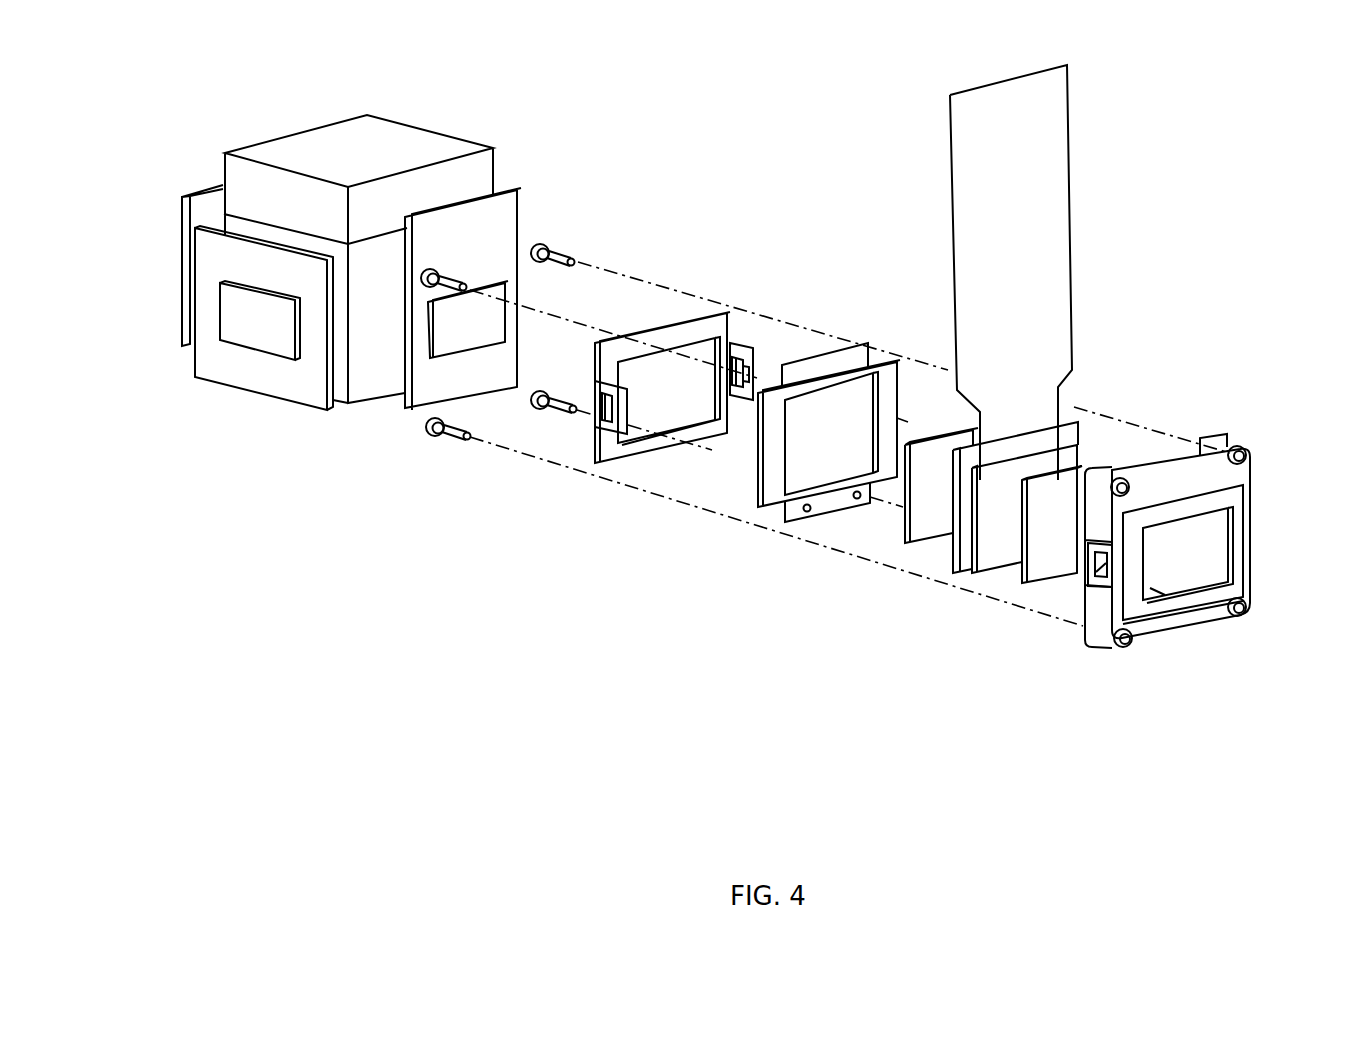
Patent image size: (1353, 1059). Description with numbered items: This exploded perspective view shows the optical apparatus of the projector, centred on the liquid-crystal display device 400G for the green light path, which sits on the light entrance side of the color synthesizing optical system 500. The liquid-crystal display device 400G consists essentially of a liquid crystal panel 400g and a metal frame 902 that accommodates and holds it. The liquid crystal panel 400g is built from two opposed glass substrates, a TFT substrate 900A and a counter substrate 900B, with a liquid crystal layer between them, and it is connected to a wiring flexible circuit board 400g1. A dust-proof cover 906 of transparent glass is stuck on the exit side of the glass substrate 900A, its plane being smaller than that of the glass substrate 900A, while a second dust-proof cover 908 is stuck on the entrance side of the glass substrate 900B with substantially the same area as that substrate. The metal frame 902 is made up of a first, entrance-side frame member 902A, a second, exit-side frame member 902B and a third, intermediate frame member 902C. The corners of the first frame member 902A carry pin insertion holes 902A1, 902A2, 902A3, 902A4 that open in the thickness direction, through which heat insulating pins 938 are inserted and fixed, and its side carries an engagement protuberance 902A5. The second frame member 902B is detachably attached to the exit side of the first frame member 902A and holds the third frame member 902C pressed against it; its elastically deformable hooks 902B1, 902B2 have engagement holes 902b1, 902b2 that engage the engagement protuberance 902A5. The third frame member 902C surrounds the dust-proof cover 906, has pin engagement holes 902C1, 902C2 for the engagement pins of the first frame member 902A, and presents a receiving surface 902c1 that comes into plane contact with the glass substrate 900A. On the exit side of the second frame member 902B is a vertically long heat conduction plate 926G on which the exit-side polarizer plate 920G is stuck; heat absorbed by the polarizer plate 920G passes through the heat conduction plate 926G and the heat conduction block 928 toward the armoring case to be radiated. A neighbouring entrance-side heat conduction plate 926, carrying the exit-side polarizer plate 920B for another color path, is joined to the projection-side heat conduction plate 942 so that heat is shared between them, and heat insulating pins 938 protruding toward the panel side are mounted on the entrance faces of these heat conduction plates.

The liquid-crystal display device 400G is at (1118, 180).
The liquid crystal panel 400g is at (1060, 694).
The wiring flexible circuit board 400g1 is at (1053, 133).
The color synthesizing optical system 500 is at (365, 332).
The heat conduction block 928 is at (307, 143).
The projection-side heat conduction plate 942 is at (197, 192).
The entrance-side heat conduction plate 926 is at (185, 362).
The exit-side polarizer plate 920B is at (267, 347).
The exit-side polarizer plate 920G is at (456, 347).
The entrance-side heat conduction plate 926G is at (408, 410).
The heat insulating pins 938 is at (456, 277).
The metal frame 902 is at (927, 190).
The first frame member 902A is at (1140, 365).
The pin insertion hole 902A1 is at (1120, 478).
The pin insertion hole 902A2 is at (1242, 447).
The pin insertion hole 902A3 is at (1123, 648).
The pin insertion hole 902A4 is at (1246, 616).
The engagement protuberance 902A5 is at (1102, 588).
The second frame member 902B is at (668, 230).
The elastically deformable hook 902B1 is at (618, 435).
The elastically deformable hook 902B2 is at (735, 340).
The engagement hole 902b1 is at (609, 423).
The engagement hole 902b2 is at (760, 352).
The third frame member 902C is at (830, 325).
The pin engagement hole 902C1 is at (806, 512).
The pin engagement hole 902C2 is at (857, 499).
The receiving surface 902c1 is at (867, 348).
The dust-proof cover 906 is at (900, 548).
The TFT substrate 900A is at (945, 570).
The counter substrate 900B is at (992, 565).
The dust-proof cover 908 is at (1050, 567).